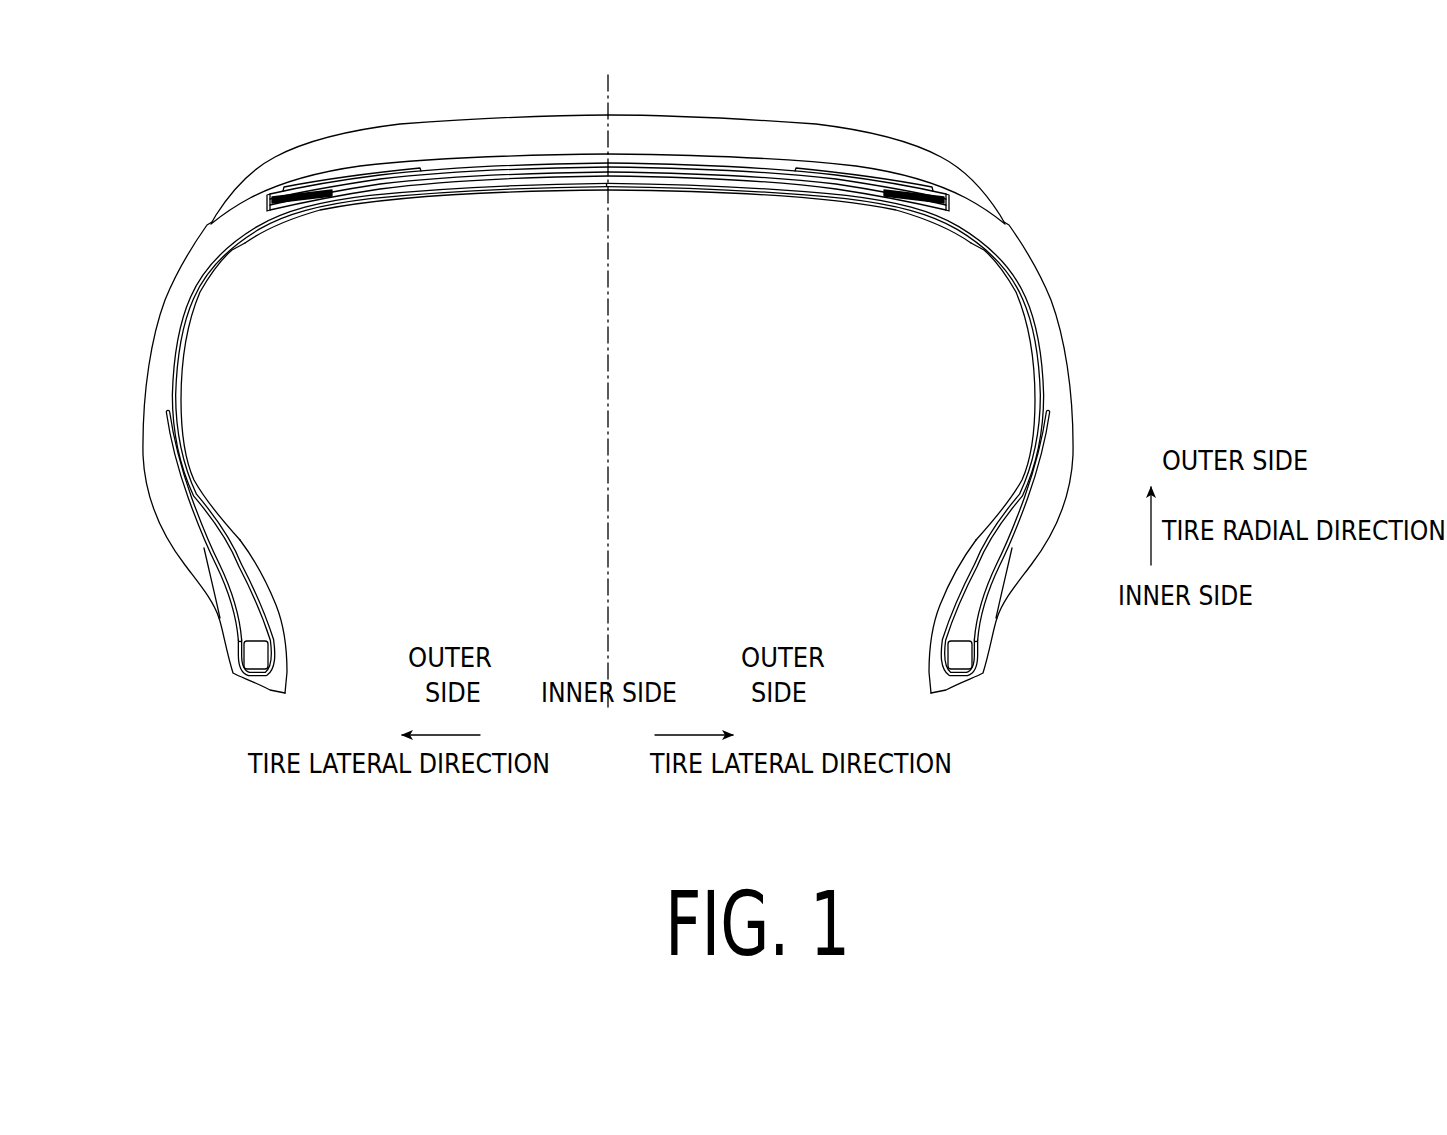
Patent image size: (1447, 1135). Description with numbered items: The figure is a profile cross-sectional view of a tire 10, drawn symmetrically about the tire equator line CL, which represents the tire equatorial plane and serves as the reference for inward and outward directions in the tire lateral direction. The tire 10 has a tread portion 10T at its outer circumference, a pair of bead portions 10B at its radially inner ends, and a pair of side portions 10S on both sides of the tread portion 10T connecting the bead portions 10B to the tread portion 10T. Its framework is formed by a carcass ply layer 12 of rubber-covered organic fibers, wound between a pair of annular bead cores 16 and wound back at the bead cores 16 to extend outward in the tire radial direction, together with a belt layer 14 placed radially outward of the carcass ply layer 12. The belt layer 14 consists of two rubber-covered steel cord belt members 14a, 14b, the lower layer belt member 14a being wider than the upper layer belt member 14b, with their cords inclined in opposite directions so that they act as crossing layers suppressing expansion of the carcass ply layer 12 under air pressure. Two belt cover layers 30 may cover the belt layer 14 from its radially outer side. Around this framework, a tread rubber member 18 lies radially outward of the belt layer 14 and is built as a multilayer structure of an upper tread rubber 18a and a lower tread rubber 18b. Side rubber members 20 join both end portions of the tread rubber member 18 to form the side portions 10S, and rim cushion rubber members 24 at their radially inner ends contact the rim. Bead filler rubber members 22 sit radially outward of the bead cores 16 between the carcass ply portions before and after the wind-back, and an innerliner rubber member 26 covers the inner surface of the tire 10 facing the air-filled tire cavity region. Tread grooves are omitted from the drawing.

The tire 10 is at (937, 72).
The tread portion 10T is at (772, 92).
The side portions 10S is at (122, 330).
The bead portions 10B is at (190, 661).
The carcass ply layer 12 is at (243, 247).
The belt layer 14 is at (608, 218).
The lower layer belt member 14a is at (641, 235).
The upper layer belt member 14b is at (660, 173).
The bead core 16 is at (260, 657).
The tread rubber member 18 is at (608, 134).
The upper tread rubber 18a is at (900, 88).
The lower tread rubber 18b is at (865, 178).
The side rubber members 20 is at (178, 490).
The bead filler rubber members 22 is at (250, 606).
The rim cushion rubber members 24 is at (232, 637).
The innerliner rubber member 26 is at (182, 377).
The belt cover layers 30 is at (418, 171).
The tire equator line CL is at (612, 378).